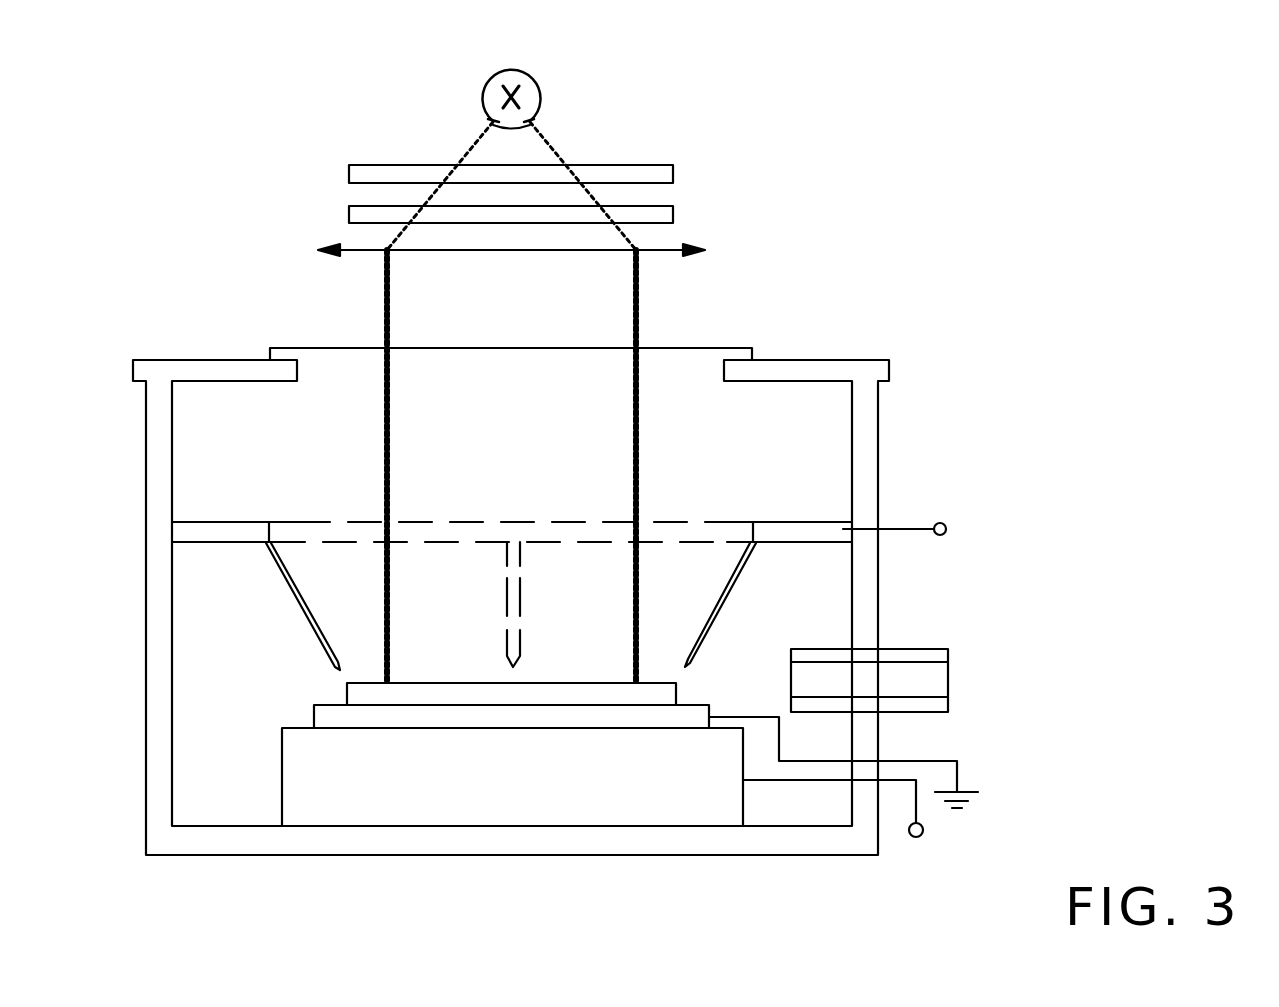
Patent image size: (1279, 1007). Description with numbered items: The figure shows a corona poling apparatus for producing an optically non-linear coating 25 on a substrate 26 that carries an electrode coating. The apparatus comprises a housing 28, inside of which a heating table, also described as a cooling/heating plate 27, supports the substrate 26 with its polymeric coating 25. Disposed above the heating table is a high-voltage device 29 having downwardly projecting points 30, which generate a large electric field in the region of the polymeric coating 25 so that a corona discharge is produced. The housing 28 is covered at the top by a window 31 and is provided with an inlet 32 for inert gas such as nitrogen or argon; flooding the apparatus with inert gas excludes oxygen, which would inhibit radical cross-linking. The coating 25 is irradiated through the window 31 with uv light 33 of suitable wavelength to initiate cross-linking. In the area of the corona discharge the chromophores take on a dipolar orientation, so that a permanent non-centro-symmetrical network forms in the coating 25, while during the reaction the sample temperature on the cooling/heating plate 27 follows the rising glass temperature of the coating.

The optically non-linear coating 25 is at (578, 695).
The substrate 26 is at (467, 715).
The cooling/heating plate 27 is at (314, 812).
The housing 28 is at (864, 438).
The high-voltage device 29 is at (808, 527).
The downwardly projecting points 30 is at (692, 664).
The window 31 is at (700, 356).
The inlet 32 is at (889, 660).
The uv light 33 is at (637, 307).